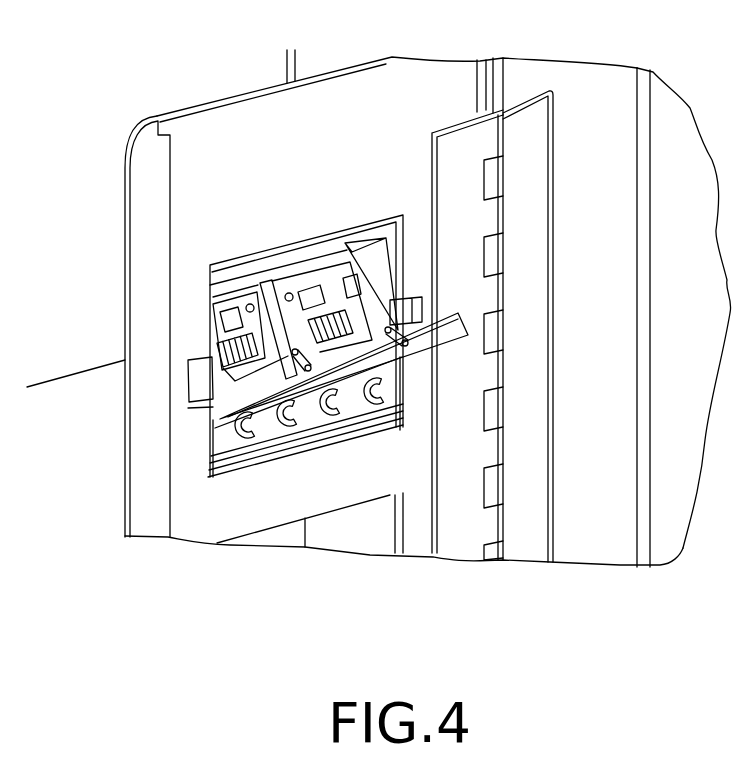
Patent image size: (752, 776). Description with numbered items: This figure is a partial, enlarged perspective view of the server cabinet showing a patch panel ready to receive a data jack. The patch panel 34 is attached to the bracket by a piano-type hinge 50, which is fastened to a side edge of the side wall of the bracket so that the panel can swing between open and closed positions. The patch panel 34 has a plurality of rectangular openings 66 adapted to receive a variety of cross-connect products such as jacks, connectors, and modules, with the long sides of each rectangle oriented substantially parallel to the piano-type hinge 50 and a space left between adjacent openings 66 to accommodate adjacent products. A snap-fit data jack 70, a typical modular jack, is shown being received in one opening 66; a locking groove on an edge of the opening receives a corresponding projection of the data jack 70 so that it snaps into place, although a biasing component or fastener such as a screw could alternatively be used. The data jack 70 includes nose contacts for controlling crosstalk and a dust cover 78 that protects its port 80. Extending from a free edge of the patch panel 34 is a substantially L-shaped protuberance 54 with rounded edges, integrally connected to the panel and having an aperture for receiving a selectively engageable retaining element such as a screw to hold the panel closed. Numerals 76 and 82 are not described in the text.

The patch panel 34 is at (265, 152).
The piano-type hinge 50 is at (500, 315).
The L-shaped protuberance 54 is at (157, 215).
The opening 66 is at (346, 244).
The data jack 70 is at (327, 292).
The lever bar 76 is at (210, 357).
The dust cover 78 is at (210, 404).
The port 80 is at (213, 308).
The tab 82 is at (190, 385).